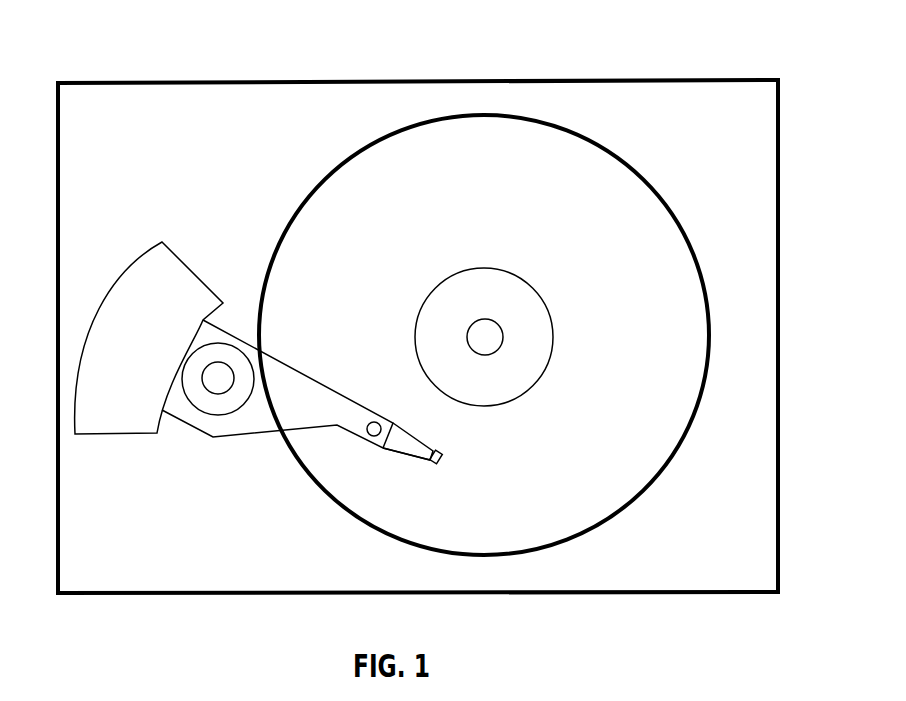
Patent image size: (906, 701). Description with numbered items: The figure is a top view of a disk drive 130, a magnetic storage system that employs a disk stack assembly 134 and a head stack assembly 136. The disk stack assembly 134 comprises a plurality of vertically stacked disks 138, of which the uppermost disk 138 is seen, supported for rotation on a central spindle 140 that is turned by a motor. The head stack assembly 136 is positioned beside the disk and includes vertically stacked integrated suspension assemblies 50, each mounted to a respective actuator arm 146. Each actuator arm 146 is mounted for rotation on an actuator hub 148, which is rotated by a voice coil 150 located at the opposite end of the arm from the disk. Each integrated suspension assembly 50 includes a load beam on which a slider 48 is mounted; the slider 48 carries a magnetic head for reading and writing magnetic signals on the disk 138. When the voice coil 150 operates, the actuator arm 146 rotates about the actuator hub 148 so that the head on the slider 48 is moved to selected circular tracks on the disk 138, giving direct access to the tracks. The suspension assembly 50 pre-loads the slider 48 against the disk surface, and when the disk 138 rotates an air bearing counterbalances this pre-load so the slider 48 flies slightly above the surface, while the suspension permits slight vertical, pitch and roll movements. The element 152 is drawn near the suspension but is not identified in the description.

The disk drive 130 is at (605, 51).
The disk stack assembly 134 is at (630, 163).
The head stack assembly 136 is at (315, 378).
The disk 138 is at (628, 313).
The spindle 140 is at (499, 327).
The actuator arm 146 is at (275, 353).
The actuator hub 148 is at (212, 400).
The voice coil 150 is at (200, 278).
The suspension load beam 152 is at (413, 436).
The slider 48 is at (440, 460).
The integrated suspension assembly 50 is at (396, 452).